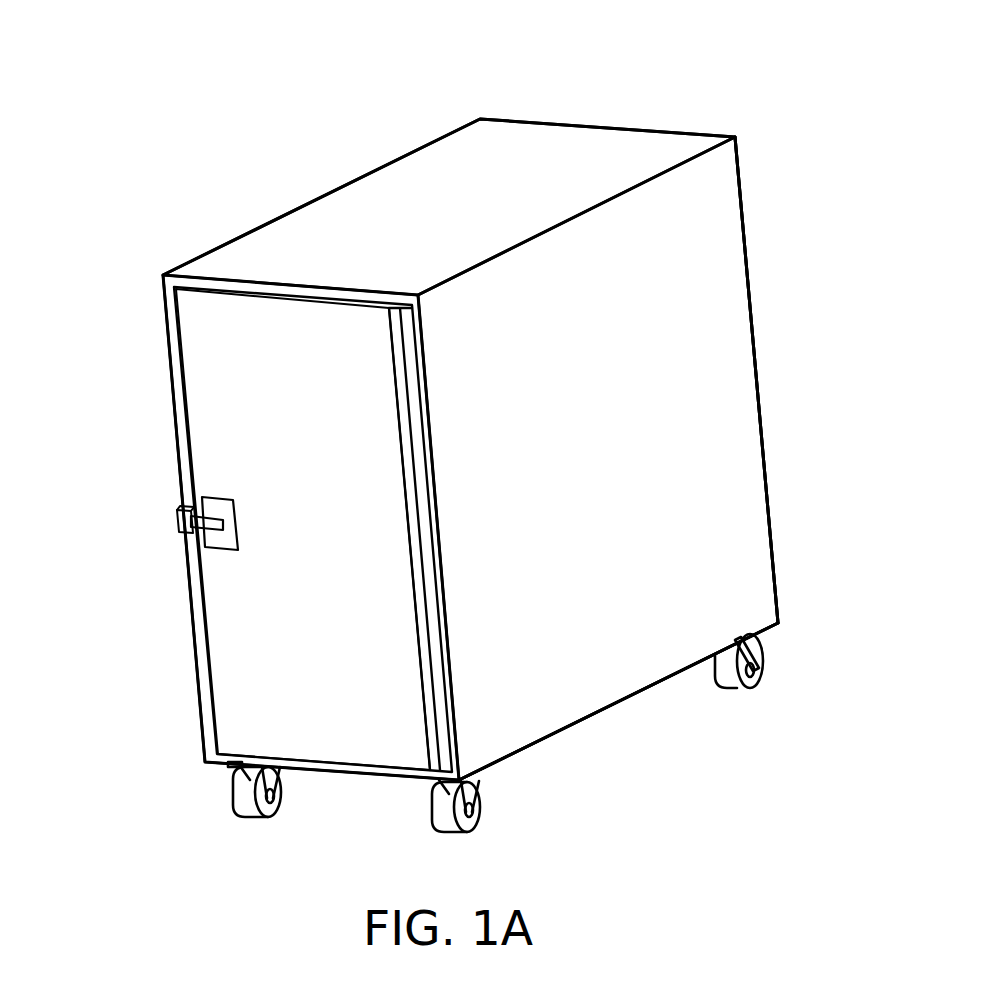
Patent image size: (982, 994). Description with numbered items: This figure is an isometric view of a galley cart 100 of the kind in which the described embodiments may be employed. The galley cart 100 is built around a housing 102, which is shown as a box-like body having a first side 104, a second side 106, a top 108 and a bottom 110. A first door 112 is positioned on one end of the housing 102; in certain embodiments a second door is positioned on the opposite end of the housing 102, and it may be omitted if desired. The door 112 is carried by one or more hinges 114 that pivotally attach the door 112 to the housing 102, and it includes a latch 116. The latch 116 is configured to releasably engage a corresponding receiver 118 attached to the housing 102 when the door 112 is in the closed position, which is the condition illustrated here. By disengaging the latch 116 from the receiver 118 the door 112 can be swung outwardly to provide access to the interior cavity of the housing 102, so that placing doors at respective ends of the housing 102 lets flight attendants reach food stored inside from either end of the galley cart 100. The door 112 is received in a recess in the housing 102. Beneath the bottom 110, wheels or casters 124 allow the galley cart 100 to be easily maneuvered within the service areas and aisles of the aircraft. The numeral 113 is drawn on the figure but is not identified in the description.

The galley cart 100 is at (243, 173).
The housing 102 is at (352, 178).
The first side 104 is at (663, 468).
The second side 106 is at (167, 363).
The top 108 is at (497, 153).
The bottom 110 is at (583, 723).
The first door 112 is at (280, 603).
The rear edge 113 is at (750, 280).
The hinges 114 is at (433, 655).
The latch 116 is at (215, 545).
The receiver 118 is at (183, 533).
The casters 124 is at (247, 810).